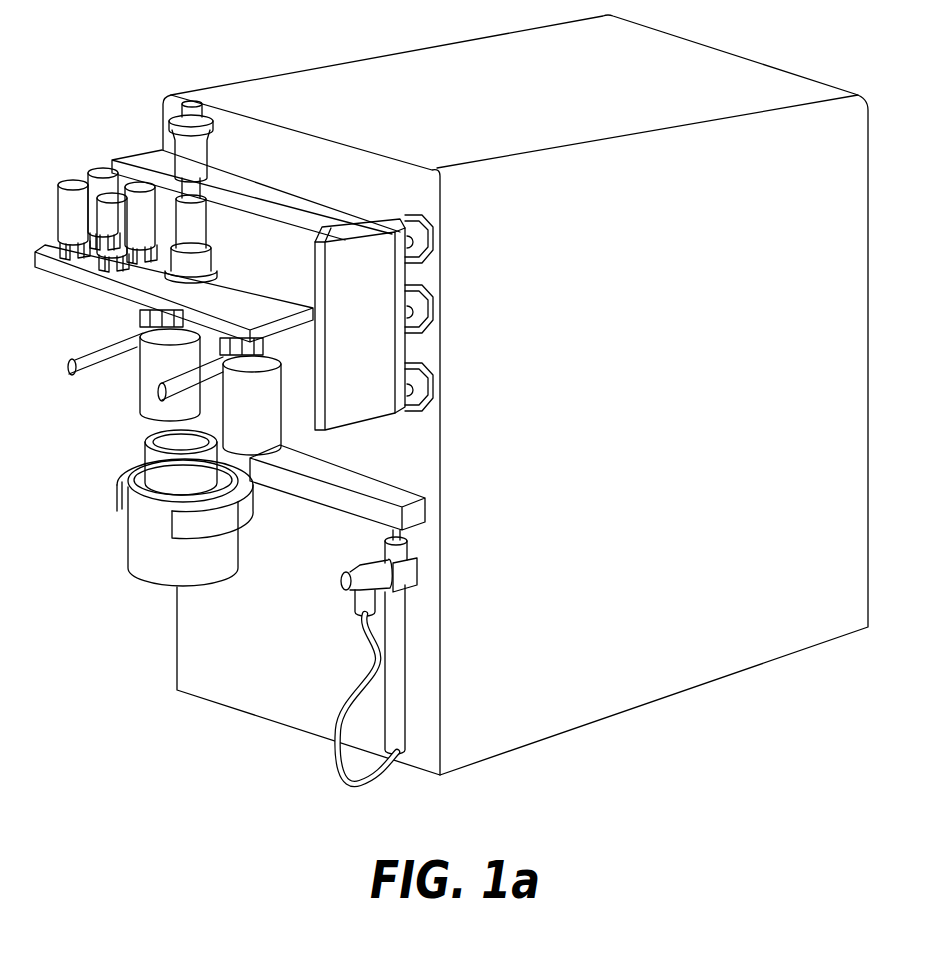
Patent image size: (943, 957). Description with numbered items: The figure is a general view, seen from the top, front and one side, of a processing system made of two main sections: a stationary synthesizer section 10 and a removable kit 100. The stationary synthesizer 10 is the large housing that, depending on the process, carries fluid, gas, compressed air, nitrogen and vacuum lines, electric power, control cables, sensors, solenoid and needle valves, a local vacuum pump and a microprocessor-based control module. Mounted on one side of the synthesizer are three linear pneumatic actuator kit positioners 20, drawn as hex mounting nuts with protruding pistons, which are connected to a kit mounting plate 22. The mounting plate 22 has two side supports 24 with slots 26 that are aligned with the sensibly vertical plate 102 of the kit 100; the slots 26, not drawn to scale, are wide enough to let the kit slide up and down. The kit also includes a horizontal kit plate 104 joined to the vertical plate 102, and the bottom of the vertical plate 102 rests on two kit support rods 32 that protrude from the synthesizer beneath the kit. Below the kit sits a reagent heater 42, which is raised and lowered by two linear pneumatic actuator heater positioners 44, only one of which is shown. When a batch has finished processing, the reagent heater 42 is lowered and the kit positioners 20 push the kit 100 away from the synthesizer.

The stationary synthesizer section 10 is at (688, 404).
The removable kit 100 is at (287, 420).
The vertical kit plate 102 is at (265, 252).
The horizontal kit plate 104 is at (262, 320).
The linear pneumatic actuator kit positioners 20 is at (427, 348).
The kit mounting plate 22 is at (336, 236).
The side supports 24 is at (372, 319).
The slots 26 is at (400, 230).
The kit support rods 32 is at (143, 410).
The reagent heater 42 is at (192, 574).
The linear pneumatic actuator heater positioners 44 is at (398, 647).